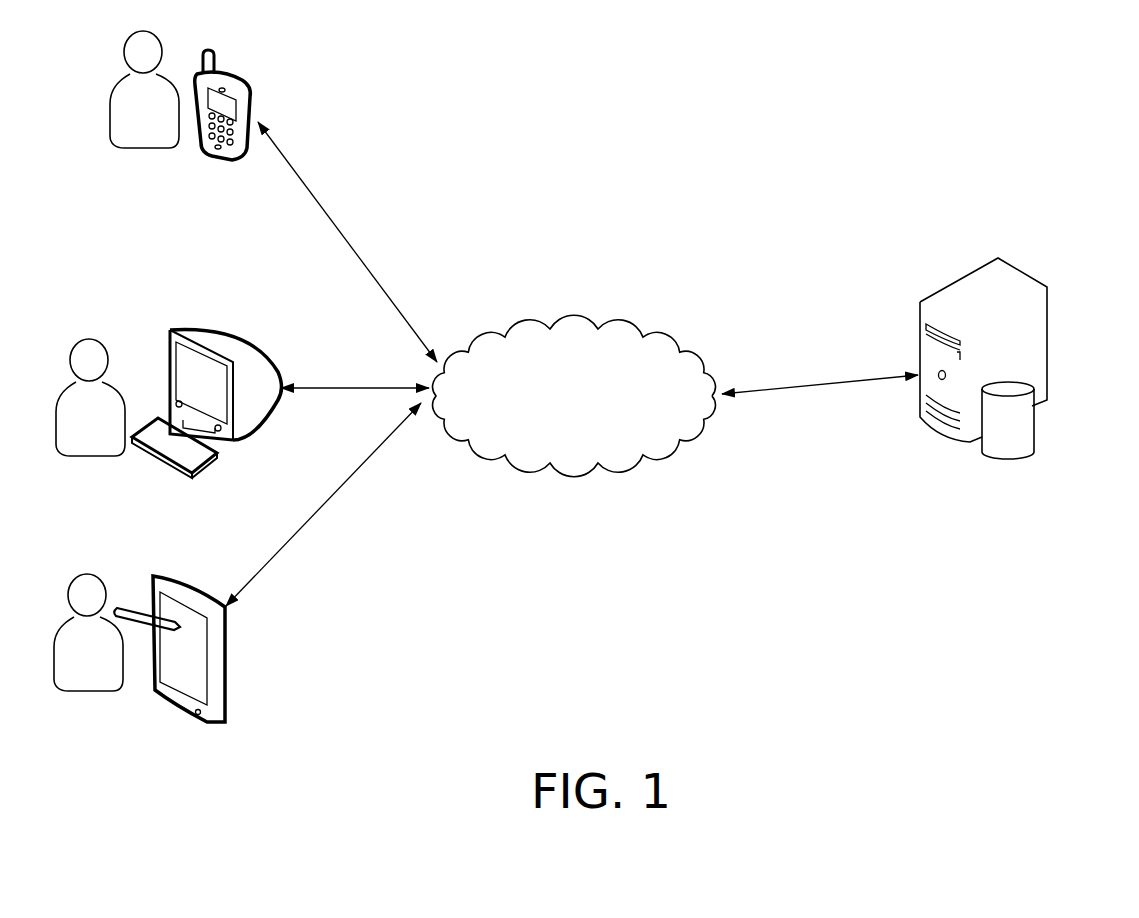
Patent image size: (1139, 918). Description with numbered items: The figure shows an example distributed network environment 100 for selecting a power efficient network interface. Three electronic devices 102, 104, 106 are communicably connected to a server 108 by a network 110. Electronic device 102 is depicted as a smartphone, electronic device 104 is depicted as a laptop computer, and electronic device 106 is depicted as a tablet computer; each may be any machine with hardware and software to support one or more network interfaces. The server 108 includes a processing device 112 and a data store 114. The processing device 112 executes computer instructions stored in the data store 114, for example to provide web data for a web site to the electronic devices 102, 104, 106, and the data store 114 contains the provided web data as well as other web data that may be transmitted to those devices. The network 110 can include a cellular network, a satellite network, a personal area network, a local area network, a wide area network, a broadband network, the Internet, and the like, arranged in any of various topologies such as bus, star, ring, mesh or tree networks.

The network environment 100 is at (703, 58).
The electronic device 102 is at (235, 80).
The electronic device 104 is at (247, 343).
The electronic device 106 is at (175, 578).
The server 108 is at (941, 269).
The network 110 is at (572, 322).
The processing device 112 is at (993, 338).
The data store 114 is at (1035, 450).